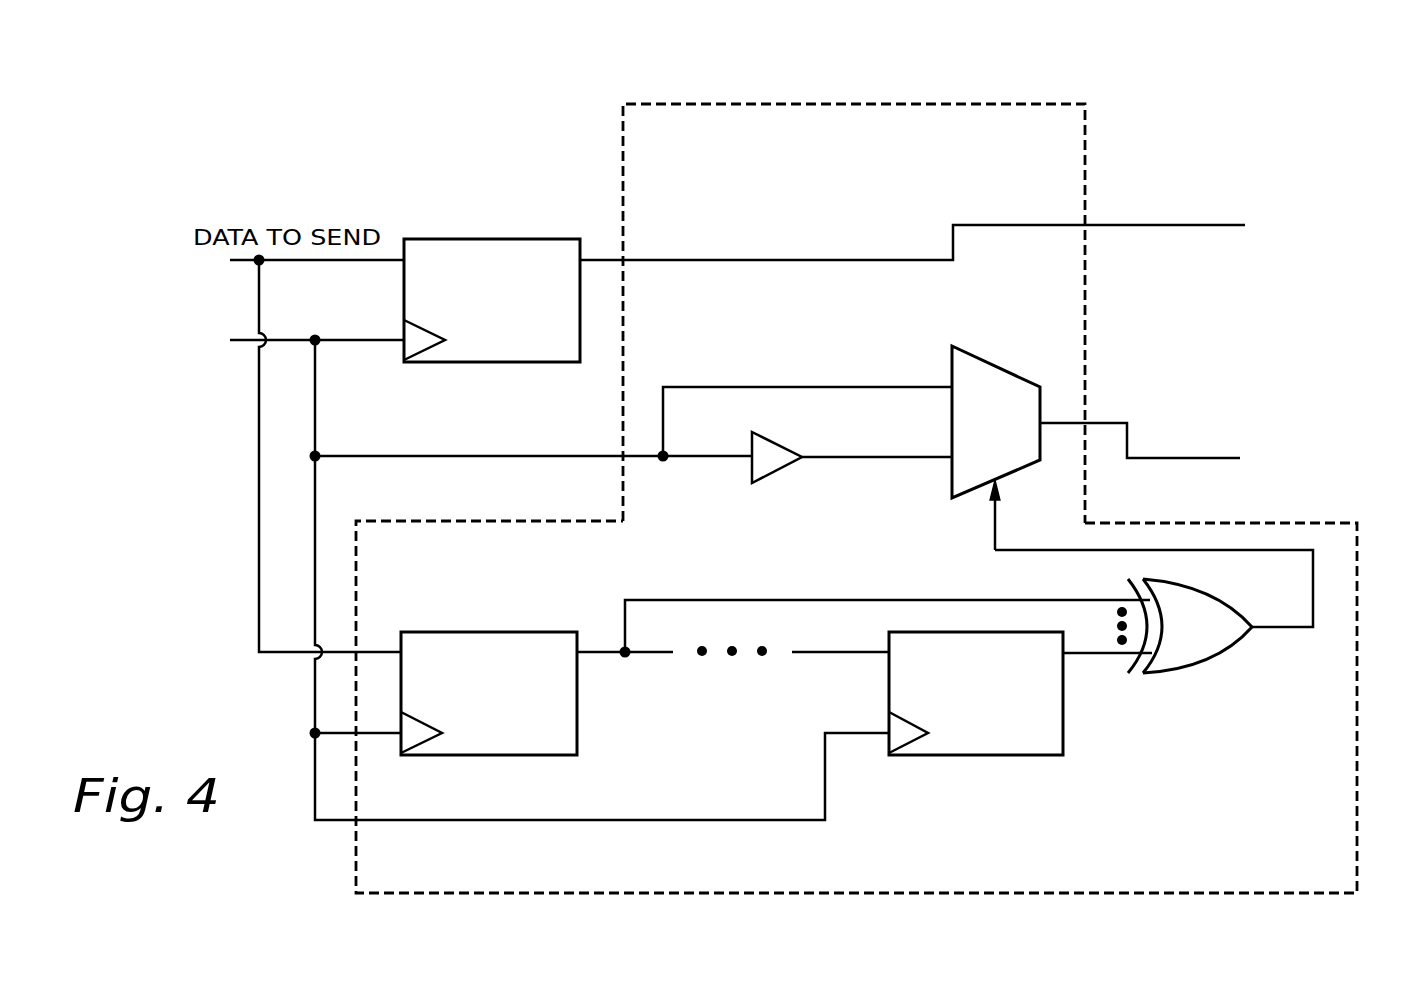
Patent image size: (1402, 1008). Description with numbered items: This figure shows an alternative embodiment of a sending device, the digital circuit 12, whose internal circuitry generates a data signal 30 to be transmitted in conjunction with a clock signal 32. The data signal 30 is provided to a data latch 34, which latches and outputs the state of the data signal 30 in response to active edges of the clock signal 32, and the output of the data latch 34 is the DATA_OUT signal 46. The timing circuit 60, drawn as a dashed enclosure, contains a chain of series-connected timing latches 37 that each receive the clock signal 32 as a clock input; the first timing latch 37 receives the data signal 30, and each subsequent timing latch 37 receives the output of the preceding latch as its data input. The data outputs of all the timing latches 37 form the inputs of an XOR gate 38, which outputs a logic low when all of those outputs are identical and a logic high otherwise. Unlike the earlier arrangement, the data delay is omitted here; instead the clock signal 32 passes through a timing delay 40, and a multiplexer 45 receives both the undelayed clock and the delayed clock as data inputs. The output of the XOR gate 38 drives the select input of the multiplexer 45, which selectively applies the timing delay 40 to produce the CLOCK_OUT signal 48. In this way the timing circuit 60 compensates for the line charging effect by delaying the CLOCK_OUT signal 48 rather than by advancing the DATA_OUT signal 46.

The digital circuit 12 is at (1168, 98).
The data signal 30 is at (323, 262).
The clock signal 32 is at (358, 343).
The data latch 34 is at (553, 339).
The timing latch 37 is at (551, 733).
The XOR gate 38 is at (1203, 663).
The clock delay 40 is at (783, 440).
The multiplexer 45 is at (1030, 437).
The DATA_OUT signal 46 is at (1200, 228).
The CLOCK_OUT signal 48 is at (1195, 460).
The timing circuit 60 is at (1305, 848).